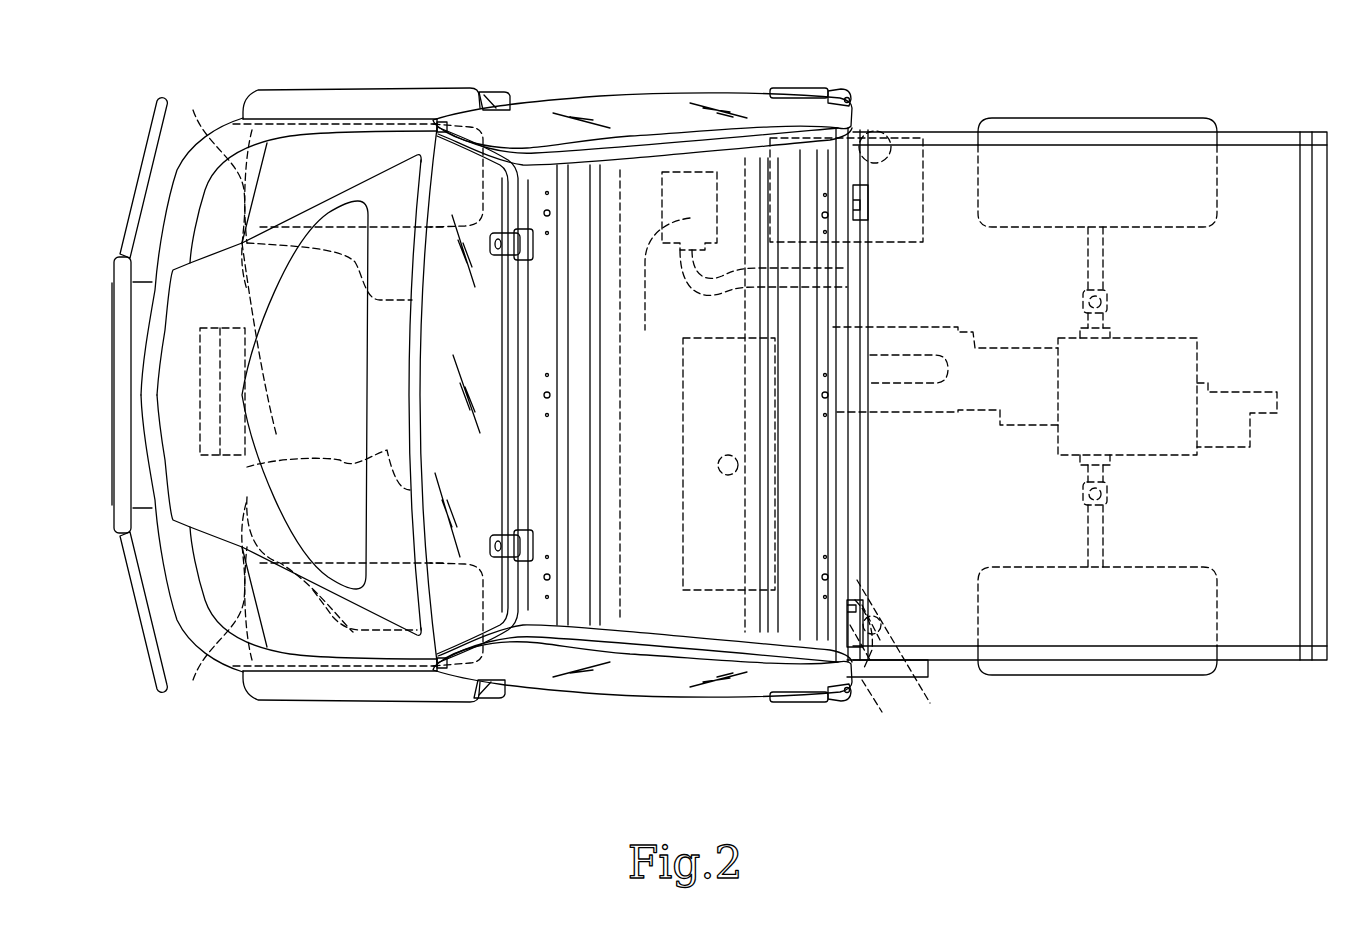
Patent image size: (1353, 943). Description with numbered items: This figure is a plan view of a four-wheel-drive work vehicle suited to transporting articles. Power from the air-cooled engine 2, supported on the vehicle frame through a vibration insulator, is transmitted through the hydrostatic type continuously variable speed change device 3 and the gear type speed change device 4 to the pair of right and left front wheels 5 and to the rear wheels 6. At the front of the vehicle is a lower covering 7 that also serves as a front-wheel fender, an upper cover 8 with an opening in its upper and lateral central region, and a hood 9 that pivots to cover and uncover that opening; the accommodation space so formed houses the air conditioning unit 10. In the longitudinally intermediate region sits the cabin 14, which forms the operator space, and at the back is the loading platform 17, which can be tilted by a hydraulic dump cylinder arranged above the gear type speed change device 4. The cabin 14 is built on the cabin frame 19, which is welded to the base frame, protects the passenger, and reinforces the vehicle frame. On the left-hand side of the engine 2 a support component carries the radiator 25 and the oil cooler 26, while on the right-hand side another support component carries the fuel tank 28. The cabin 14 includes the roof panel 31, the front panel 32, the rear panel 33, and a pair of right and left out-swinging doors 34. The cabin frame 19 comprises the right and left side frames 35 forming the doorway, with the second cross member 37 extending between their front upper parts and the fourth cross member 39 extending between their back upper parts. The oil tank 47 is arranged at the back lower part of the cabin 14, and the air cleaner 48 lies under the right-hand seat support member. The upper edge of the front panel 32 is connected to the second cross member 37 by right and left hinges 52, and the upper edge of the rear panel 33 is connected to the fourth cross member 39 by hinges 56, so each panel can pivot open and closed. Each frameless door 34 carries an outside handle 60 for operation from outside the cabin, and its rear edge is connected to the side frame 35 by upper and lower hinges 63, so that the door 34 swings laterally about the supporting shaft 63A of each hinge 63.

The air-cooled engine 2 is at (910, 326).
The hydrostatic type continuously variable speed change device 3 is at (1225, 448).
The gear type speed change device 4 is at (1168, 338).
The front wheels 5 is at (201, 140).
The rear wheels 6 is at (1097, 118).
The lower covering 7 is at (296, 92).
The upper cover 8 is at (352, 143).
The hood 9 is at (305, 213).
The air conditioning unit 10 is at (242, 497).
The cabin 14 is at (719, 729).
The loading platform 17 is at (1258, 132).
The cabin frame 19 is at (858, 107).
The radiator 25 is at (913, 690).
The oil cooler 26 is at (865, 678).
The fuel tank 28 is at (935, 222).
The roof panel 31 is at (658, 612).
The front panel 32 is at (437, 385).
The rear panel 33 is at (860, 508).
The door 34 is at (674, 97).
The side frames 35 is at (605, 143).
The 2nd cross member 37 is at (537, 340).
The 4th cross member 39 is at (836, 458).
The oil tank 47 is at (683, 505).
The air cleaner 48 is at (735, 251).
The hinges 52 is at (492, 250).
The hinges 56 is at (868, 205).
The outside handle 60 is at (485, 92).
The hinges 63 is at (792, 88).
The supporting shaft 63A is at (849, 96).